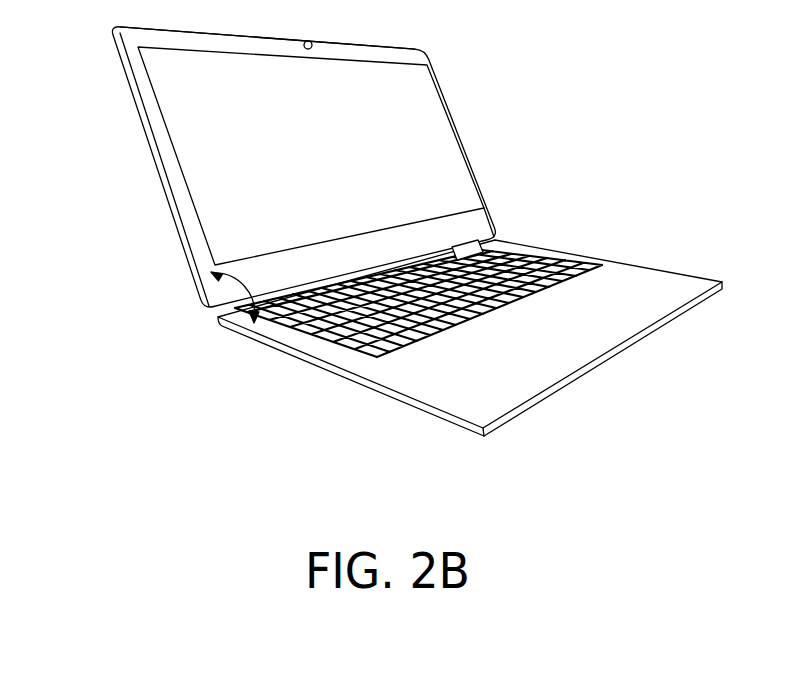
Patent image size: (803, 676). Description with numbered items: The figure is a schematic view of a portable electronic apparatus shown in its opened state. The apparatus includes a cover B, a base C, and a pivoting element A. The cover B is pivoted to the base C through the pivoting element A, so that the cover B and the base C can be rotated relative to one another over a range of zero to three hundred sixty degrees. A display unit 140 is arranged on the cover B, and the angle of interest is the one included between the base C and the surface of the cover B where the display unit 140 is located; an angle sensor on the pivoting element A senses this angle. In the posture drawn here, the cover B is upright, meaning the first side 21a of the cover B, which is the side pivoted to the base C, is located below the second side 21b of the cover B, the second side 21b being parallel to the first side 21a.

The first side 21a is at (463, 236).
The second side 21b is at (381, 44).
The display unit 140 is at (437, 112).
The pivoting element A is at (312, 288).
The cover B is at (135, 60).
The base C is at (653, 277).